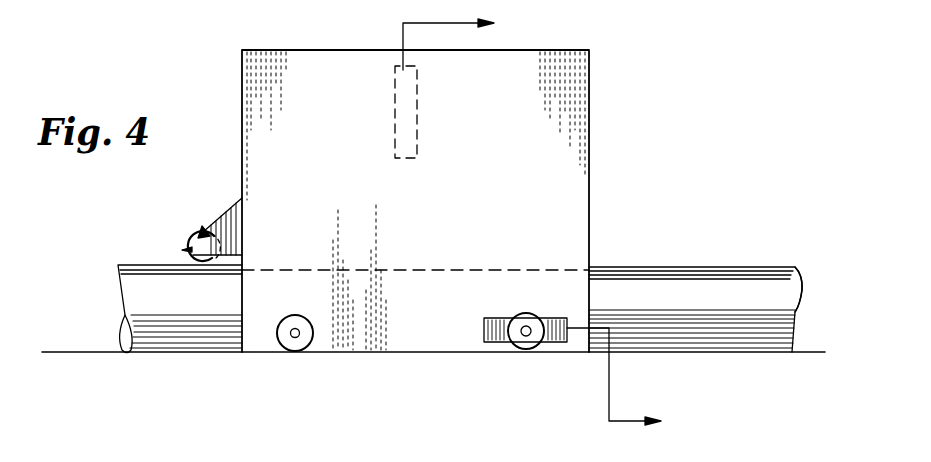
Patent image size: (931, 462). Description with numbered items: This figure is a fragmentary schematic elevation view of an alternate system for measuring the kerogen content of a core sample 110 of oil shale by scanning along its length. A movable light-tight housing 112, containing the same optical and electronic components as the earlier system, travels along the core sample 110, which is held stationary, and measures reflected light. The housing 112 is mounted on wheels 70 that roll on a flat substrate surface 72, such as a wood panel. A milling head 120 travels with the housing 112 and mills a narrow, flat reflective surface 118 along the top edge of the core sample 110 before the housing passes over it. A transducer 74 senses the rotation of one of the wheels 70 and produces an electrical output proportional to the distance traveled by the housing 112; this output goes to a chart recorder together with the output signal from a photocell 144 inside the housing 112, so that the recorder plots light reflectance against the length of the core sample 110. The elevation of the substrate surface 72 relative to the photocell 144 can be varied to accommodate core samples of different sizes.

The wheels 70 is at (300, 350).
The flat substrate surface 72 is at (800, 352).
The transducer 74 is at (496, 325).
The core sample 110 is at (755, 268).
The movable light-tight housing 112 is at (578, 163).
The flat reflective surface 118 is at (700, 268).
The milling head 120 is at (183, 247).
The photocell 144 is at (417, 105).